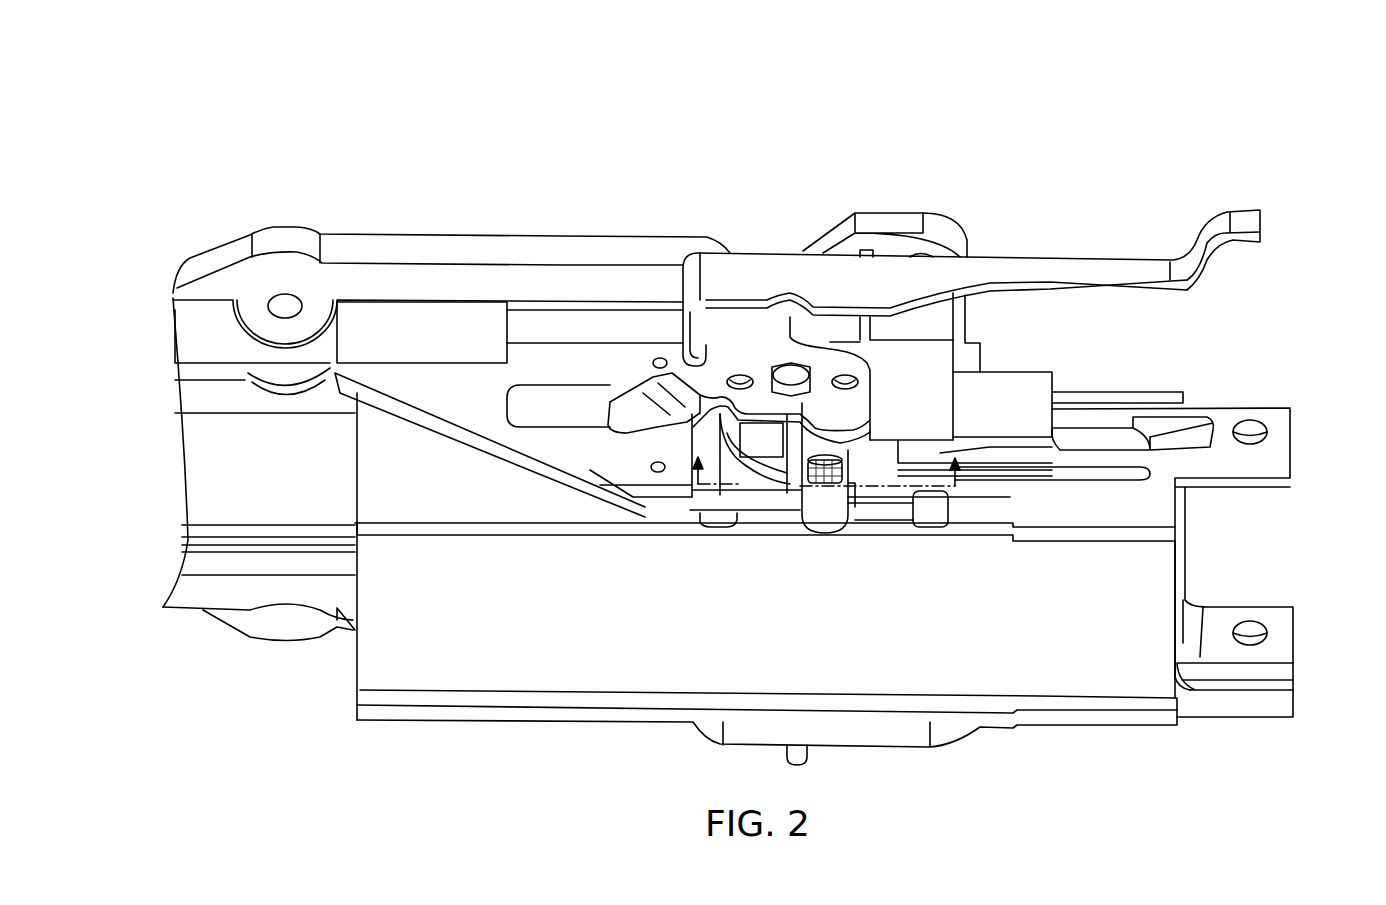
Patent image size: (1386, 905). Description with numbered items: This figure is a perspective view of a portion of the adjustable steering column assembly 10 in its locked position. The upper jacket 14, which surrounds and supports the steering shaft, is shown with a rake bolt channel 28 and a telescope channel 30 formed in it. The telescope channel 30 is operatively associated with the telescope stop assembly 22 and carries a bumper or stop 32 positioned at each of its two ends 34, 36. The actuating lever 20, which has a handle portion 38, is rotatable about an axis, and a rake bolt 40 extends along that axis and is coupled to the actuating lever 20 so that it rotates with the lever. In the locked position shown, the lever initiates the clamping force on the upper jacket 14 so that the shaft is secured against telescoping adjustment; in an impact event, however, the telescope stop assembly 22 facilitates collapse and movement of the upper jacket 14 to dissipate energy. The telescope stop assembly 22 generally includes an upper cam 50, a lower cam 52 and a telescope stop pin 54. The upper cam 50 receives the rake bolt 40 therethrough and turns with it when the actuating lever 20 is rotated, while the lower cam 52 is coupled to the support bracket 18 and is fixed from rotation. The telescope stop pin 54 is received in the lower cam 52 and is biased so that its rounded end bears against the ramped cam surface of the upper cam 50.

The adjustable steering column assembly 10 is at (1185, 125).
The upper jacket 14 is at (1295, 447).
The support bracket 18 is at (480, 238).
The actuating lever 20 is at (748, 270).
The telescope stop assembly 22 is at (885, 426).
The rake bolt channel 28 is at (1063, 437).
The telescope channel 30 is at (858, 528).
The bumper or stop 32 is at (935, 515).
The end of telescope channel 34 is at (742, 543).
The end of telescope channel 36 is at (882, 547).
The handle portion 38 is at (1245, 208).
The rake bolt 40 is at (790, 375).
The upper cam 50 is at (868, 423).
The lower cam 52 is at (853, 477).
The telescope stop pin 54 is at (845, 487).